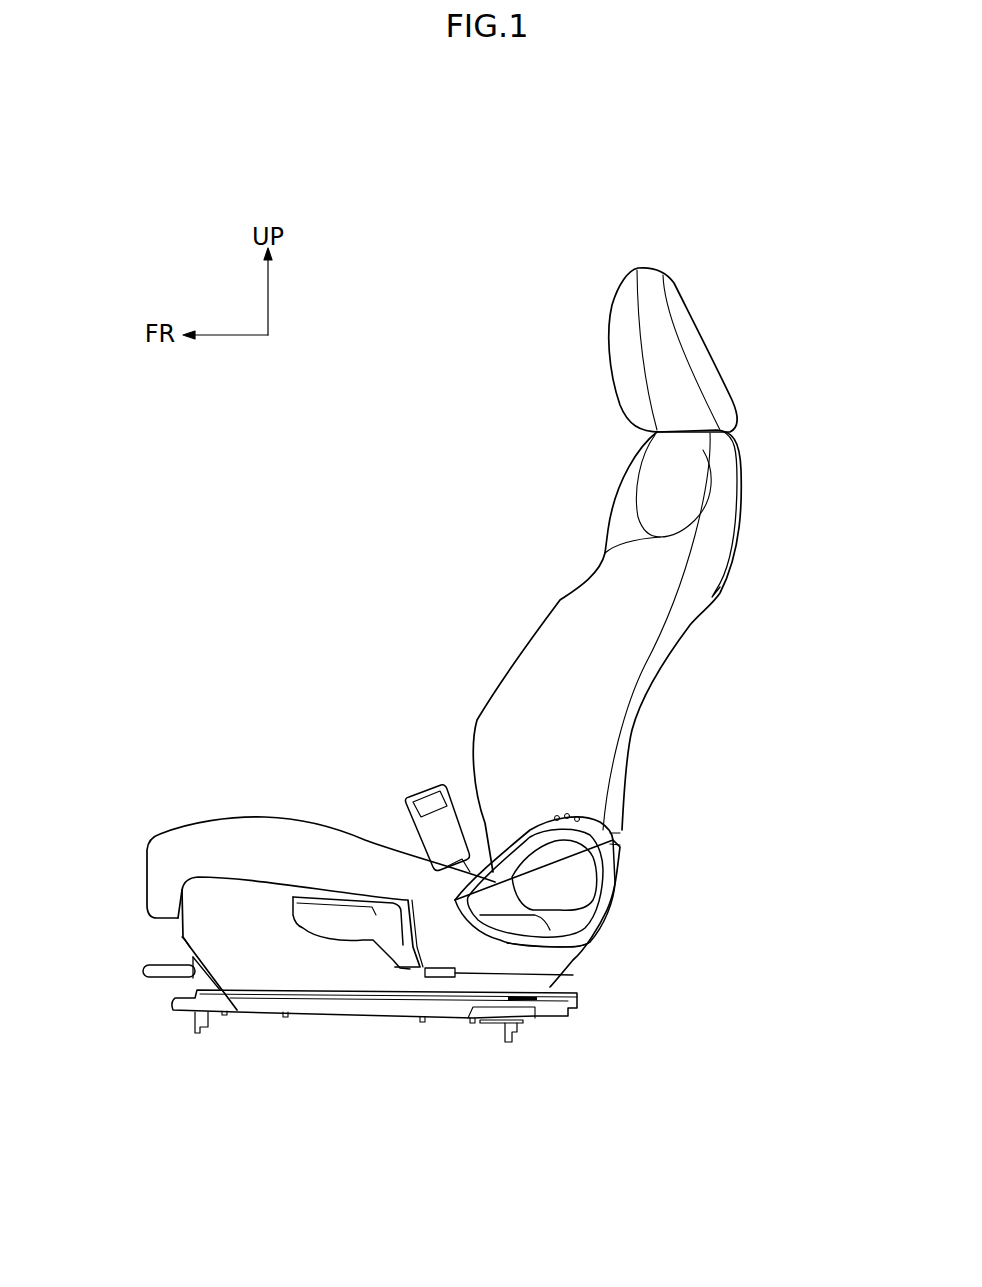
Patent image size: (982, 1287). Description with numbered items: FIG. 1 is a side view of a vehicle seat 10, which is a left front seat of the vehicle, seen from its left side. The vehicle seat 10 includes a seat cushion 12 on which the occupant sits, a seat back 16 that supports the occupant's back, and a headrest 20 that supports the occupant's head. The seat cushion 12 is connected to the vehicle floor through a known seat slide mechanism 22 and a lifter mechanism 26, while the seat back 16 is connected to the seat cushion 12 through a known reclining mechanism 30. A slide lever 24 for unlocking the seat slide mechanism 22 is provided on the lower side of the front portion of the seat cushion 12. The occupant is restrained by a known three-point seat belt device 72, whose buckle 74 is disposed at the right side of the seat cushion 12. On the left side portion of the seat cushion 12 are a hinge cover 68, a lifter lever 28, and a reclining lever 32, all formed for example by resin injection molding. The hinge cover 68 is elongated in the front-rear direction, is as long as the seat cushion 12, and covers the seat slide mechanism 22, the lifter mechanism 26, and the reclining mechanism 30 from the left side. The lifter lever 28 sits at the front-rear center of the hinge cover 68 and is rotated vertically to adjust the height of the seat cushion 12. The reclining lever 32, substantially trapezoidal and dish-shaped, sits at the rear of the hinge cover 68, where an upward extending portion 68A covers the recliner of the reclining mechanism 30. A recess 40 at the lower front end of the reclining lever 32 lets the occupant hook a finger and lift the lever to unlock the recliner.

The vehicle seat 10 is at (376, 520).
The seat cushion 12 is at (257, 828).
The seat back 16 is at (643, 675).
The headrest 20 is at (695, 345).
The seat slide mechanism 22 is at (166, 1024).
The slide lever 24 is at (145, 974).
The lifter mechanism 26 is at (161, 945).
The lifter lever 28 is at (357, 942).
The reclining mechanism 30 is at (596, 866).
The reclining lever 32 is at (600, 900).
The recess 40 is at (512, 925).
The hinge cover 68 is at (285, 968).
The upward extending portion 68A is at (568, 812).
The seat belt device 72 is at (432, 785).
The buckle 74 is at (423, 772).